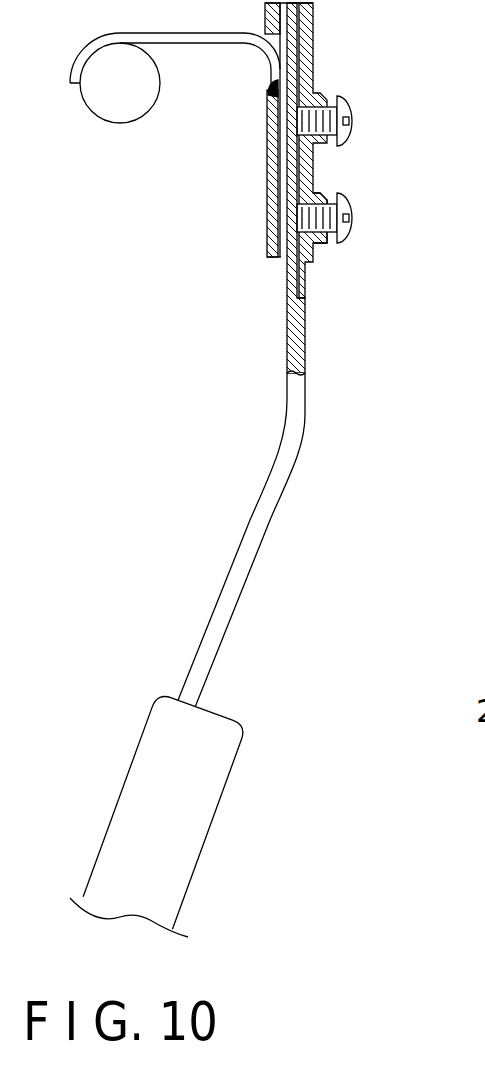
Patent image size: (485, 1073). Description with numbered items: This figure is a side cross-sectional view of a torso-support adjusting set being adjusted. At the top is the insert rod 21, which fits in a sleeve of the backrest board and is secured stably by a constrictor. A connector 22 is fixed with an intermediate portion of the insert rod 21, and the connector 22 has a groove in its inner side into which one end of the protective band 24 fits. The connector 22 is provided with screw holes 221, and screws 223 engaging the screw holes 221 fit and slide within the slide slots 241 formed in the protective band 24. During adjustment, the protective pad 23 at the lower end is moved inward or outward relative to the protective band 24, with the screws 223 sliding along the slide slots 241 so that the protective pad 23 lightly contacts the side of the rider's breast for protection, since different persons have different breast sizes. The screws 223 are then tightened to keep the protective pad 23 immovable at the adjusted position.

The insert rod 21 is at (133, 103).
The connector 22 is at (267, 193).
The protective pad 23 is at (143, 753).
The protective band 24 is at (300, 448).
The screw hole 221 is at (330, 190).
The screw 223 is at (348, 210).
The slide slot 241 is at (305, 276).